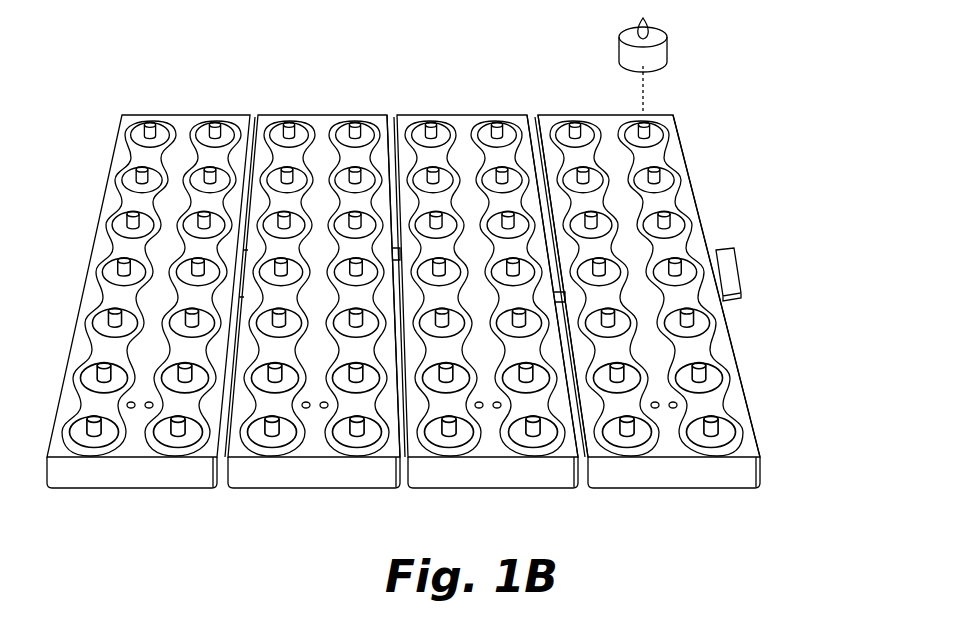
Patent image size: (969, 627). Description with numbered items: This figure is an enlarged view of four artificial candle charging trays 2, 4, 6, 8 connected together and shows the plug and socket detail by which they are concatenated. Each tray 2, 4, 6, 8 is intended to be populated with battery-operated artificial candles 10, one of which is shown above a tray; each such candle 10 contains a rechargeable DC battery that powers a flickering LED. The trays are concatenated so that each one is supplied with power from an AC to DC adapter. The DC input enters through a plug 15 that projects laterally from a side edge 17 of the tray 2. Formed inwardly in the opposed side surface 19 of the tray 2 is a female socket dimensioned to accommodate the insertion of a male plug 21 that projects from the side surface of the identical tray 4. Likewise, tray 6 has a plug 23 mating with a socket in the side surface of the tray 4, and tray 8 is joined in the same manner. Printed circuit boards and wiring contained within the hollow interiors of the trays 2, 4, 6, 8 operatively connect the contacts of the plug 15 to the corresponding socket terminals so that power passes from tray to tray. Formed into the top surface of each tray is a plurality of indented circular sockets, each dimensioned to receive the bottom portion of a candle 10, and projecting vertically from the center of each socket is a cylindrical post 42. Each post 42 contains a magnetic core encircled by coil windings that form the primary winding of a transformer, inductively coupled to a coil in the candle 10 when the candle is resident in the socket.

The charging tray 2 is at (699, 488).
The charging tray 4 is at (520, 488).
The charging tray 6 is at (345, 488).
The charging tray 8 is at (161, 488).
The artificial candle 10 is at (667, 52).
The plug 15 is at (741, 290).
The side edge 17 is at (728, 315).
The side surface 19 is at (543, 210).
The male plug 21 is at (557, 265).
The plug 23 is at (393, 262).
The cylindrical post 42 is at (705, 376).